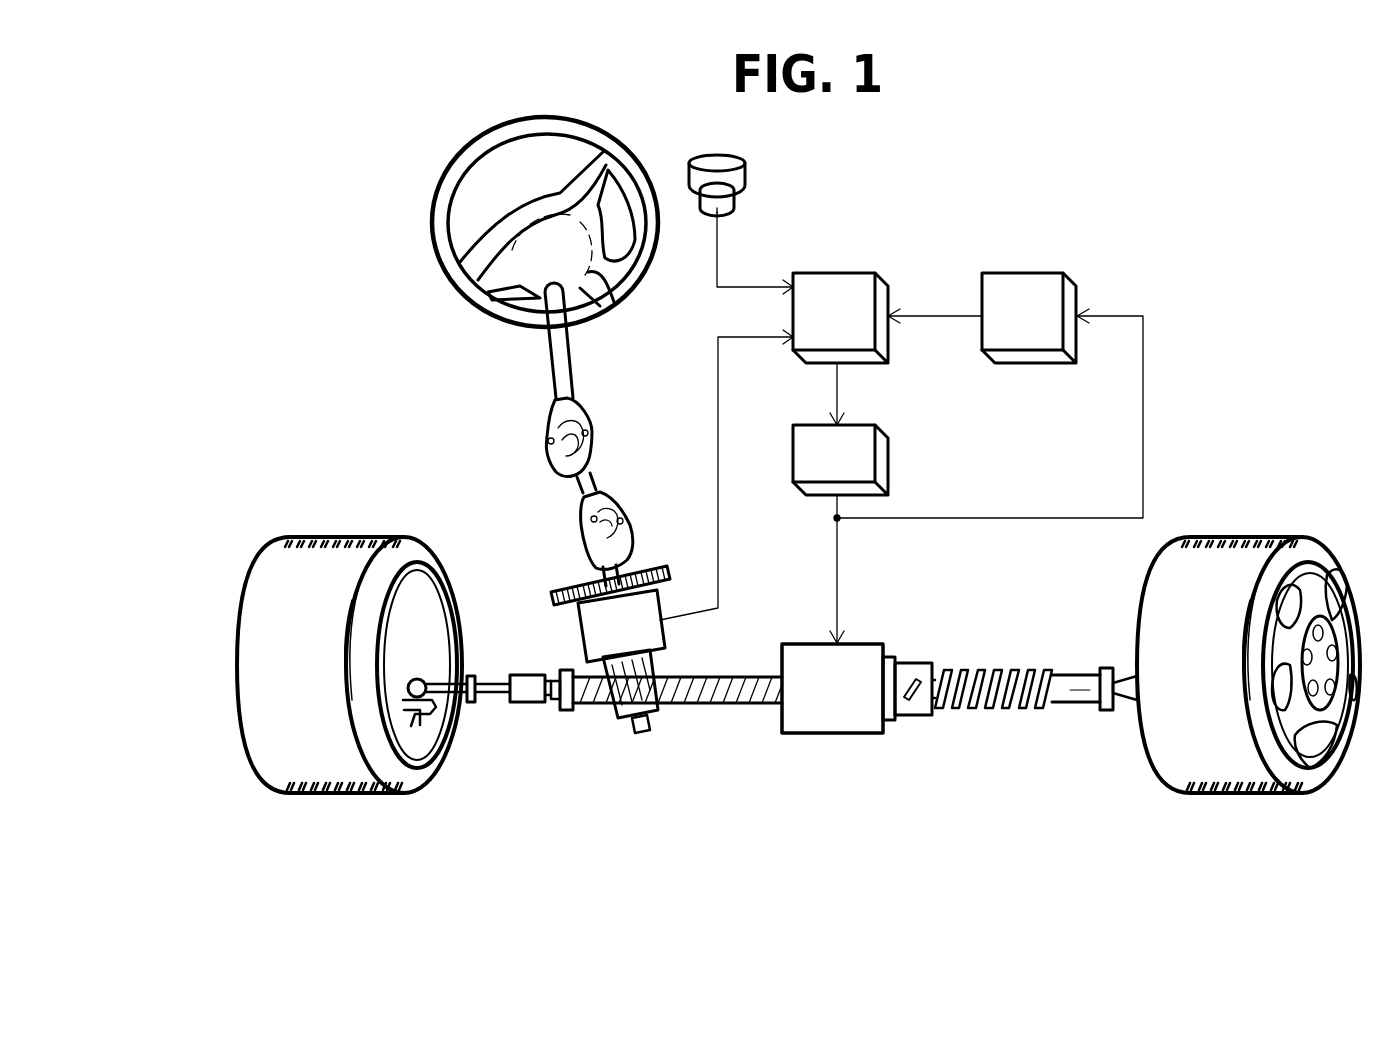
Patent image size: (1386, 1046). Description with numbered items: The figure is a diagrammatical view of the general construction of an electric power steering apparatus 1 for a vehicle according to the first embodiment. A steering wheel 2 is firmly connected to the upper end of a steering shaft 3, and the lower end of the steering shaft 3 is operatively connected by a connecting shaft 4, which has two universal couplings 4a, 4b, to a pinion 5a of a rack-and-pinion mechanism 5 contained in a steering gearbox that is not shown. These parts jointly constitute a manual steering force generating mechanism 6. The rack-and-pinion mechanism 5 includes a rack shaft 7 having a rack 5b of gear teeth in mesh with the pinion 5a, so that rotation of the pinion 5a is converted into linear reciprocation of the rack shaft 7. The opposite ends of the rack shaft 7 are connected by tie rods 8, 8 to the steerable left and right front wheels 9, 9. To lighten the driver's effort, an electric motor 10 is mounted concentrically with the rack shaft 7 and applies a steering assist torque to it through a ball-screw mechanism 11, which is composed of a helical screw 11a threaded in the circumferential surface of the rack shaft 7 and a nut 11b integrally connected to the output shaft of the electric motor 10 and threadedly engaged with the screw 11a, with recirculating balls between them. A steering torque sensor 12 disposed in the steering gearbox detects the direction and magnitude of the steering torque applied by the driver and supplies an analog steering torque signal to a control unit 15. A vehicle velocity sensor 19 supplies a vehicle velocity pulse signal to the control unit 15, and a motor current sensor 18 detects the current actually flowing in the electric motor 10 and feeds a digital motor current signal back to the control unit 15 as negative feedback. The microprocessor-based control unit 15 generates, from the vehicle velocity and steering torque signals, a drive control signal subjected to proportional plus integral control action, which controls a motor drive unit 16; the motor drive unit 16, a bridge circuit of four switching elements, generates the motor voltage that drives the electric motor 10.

The electric power steering apparatus 1 is at (952, 161).
The steering wheel 2 is at (438, 231).
The steering shaft 3 is at (548, 365).
The connecting shaft 4 is at (565, 455).
The universal coupling 4a is at (585, 410).
The universal coupling 4b is at (568, 508).
The rack-and-pinion mechanism 5 is at (666, 779).
The pinion 5a is at (617, 749).
The rack 5b is at (713, 707).
The manual steering force generating mechanism 6 is at (517, 434).
The rack shaft 7 is at (1082, 704).
The tie rod 8 is at (448, 686).
The front wheel 9 is at (320, 537).
The electric motor 10 is at (830, 735).
The ball-screw mechanism 11 is at (974, 708).
The helical screw 11a is at (990, 712).
The nut 11b is at (918, 712).
The steering torque sensor 12 is at (580, 625).
The control unit 15 is at (837, 272).
The motor drive unit 16 is at (888, 460).
The motor current sensor 18 is at (1025, 272).
The vehicle velocity sensor 19 is at (730, 160).